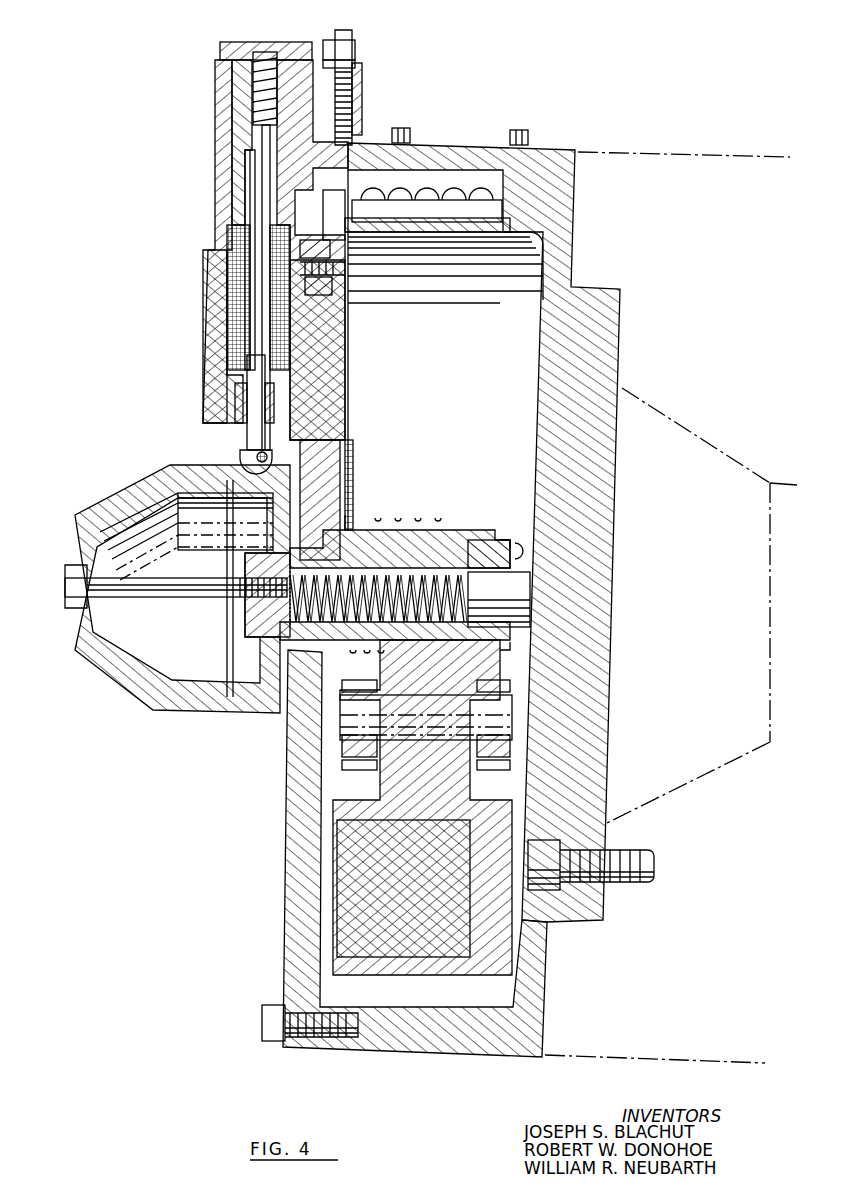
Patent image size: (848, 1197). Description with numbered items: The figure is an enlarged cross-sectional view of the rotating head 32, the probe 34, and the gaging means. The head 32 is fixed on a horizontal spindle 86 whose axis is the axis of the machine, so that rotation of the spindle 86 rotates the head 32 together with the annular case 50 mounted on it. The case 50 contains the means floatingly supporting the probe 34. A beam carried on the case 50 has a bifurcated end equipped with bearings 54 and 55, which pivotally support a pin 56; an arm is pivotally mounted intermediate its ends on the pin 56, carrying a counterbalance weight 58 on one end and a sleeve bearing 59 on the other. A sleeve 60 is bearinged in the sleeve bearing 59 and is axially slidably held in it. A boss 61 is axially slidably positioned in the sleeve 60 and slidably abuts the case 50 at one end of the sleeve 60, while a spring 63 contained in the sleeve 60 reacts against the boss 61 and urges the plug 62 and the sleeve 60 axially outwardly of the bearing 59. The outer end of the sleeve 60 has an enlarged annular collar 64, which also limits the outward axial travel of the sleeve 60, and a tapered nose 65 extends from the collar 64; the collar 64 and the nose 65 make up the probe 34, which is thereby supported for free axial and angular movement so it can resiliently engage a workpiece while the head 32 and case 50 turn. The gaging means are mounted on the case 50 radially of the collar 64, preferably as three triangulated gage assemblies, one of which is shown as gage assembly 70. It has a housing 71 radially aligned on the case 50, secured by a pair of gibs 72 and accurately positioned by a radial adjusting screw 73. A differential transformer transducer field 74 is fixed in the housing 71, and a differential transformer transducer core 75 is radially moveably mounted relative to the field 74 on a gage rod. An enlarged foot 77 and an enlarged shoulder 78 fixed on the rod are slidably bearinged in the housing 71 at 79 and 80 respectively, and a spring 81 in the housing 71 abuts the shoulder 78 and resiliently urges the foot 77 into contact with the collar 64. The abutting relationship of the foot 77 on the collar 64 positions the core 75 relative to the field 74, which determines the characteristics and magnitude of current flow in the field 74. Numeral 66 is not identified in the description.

The head 32 is at (657, 798).
The probe 34 is at (75, 543).
The annular case 50 is at (285, 962).
The bearing 54 is at (512, 745).
The bearing 55 is at (340, 745).
The pin 56 is at (426, 717).
The counterbalance weight 58 is at (455, 975).
The sleeve bearing 59 is at (474, 545).
The sleeve 60 is at (432, 552).
The boss 61 is at (499, 599).
The plug 62 is at (255, 565).
The spring 63 is at (382, 575).
The annular collar 64 is at (275, 482).
The tapered nose 65 is at (126, 492).
The shaft 66 is at (152, 584).
The gage assembly 70 is at (236, 44).
The housing 71 is at (222, 78).
The gibs 72 is at (320, 245).
The radial adjusting screw 73 is at (345, 105).
The differential transformer transducer field 74 is at (228, 243).
The differential transformer transducer core 75 is at (248, 298).
The enlarged foot 77 is at (248, 438).
The enlarged shoulder 78 is at (262, 152).
The bearing for foot 79 is at (236, 405).
The bearing for shoulder 80 is at (246, 183).
The spring 81 is at (254, 100).
The horizontal spindle 86 is at (792, 742).